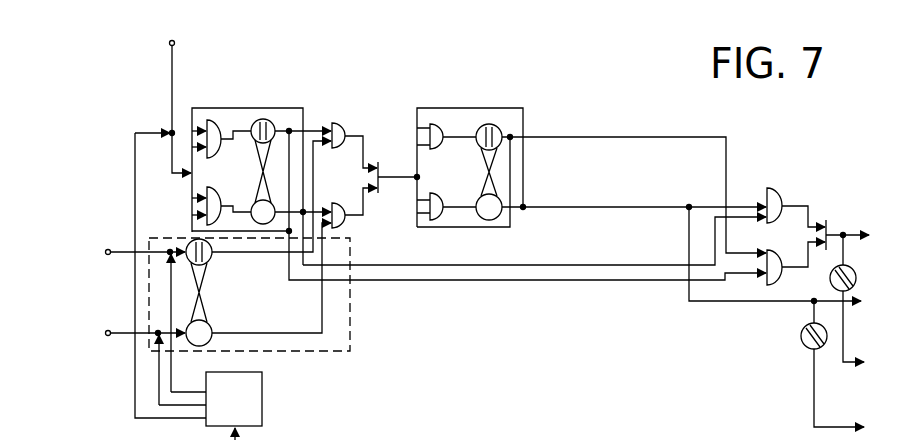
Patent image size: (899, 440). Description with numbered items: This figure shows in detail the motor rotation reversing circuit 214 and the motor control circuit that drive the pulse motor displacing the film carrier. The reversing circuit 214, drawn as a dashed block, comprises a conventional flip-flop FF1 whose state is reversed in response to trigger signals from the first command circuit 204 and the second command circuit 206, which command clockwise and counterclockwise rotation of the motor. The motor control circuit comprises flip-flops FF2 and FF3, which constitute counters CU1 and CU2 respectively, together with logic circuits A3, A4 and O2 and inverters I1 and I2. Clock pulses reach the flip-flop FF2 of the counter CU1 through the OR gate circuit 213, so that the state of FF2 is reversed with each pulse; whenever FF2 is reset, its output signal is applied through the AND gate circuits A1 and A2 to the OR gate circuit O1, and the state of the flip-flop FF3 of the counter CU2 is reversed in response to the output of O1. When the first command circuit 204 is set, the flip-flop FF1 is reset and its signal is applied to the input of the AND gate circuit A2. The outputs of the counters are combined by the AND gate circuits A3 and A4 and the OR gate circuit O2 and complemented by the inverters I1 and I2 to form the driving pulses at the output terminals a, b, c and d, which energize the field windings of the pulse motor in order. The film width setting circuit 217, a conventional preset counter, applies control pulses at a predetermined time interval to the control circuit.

The OR gate circuit 213 is at (176, 223).
The second command circuit 206 is at (130, 314).
The first command circuit 204 is at (130, 362).
The rotation reversing circuit 214 is at (335, 297).
The film width setting circuit 217 is at (262, 400).
The counter CU1 is at (263, 105).
The counter CU2 is at (492, 105).
The flip-flop FF1 is at (201, 292).
The flip-flop FF2 is at (283, 150).
The flip-flop FF3 is at (502, 162).
The AND gate circuit A1 is at (338, 128).
The AND gate circuit A2 is at (345, 219).
The AND gate circuit A3 is at (775, 200).
The AND gate circuit A4 is at (780, 278).
The OR gate circuit O1 is at (380, 188).
The OR gate circuit O2 is at (828, 232).
The inverter I1 is at (855, 270).
The inverter I2 is at (803, 327).